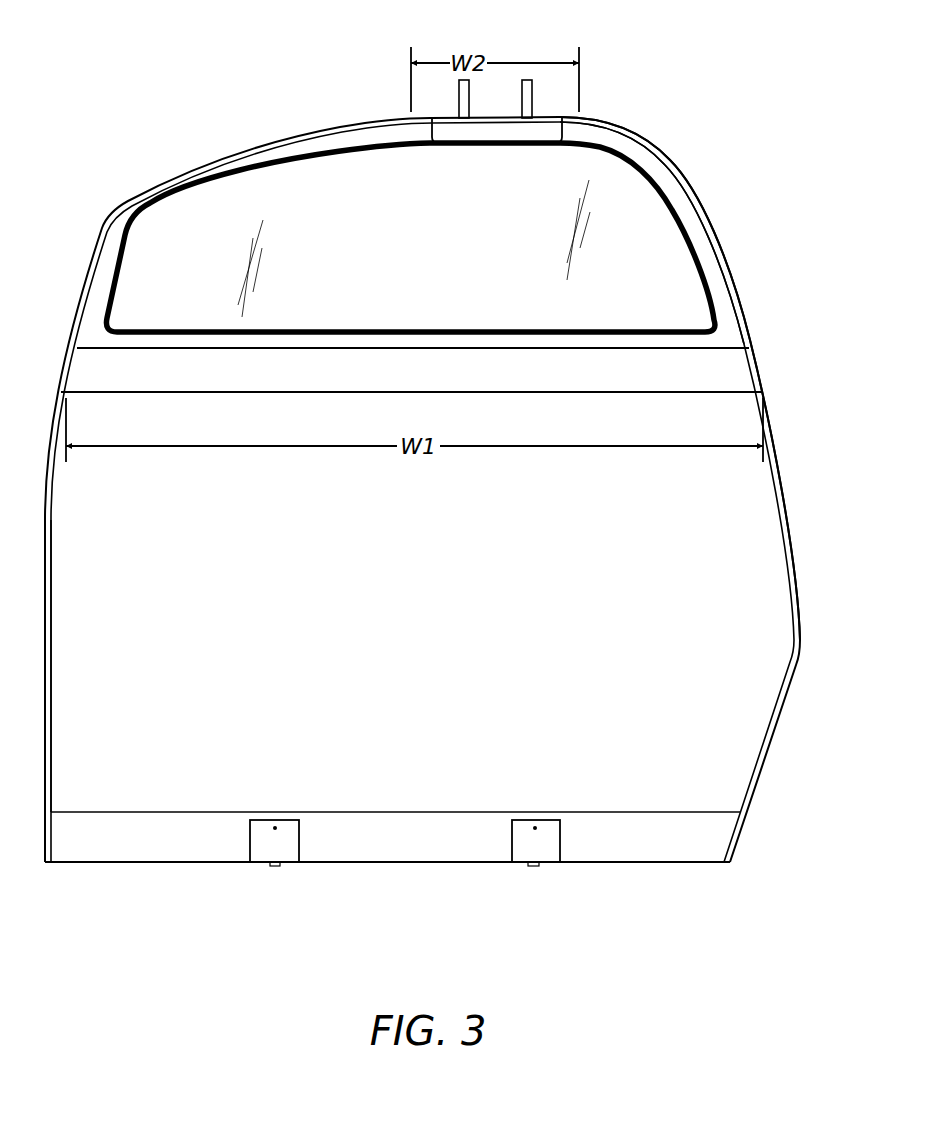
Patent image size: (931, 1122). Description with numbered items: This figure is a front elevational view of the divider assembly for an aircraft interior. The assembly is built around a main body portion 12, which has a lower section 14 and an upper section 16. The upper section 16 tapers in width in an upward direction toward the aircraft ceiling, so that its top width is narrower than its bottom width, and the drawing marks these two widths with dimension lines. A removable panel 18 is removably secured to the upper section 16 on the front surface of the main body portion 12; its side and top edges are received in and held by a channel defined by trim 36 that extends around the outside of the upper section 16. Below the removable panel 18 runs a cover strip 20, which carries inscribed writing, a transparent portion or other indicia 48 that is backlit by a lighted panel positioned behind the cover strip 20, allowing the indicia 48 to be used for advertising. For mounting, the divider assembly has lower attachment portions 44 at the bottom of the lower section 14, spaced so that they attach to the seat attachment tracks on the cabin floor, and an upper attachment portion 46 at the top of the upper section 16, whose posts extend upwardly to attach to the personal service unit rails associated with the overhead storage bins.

The main body portion 12 is at (772, 642).
The lower section 14 is at (432, 651).
The upper section 16 is at (678, 207).
The removable panel 18 is at (369, 258).
The cover strip 20 is at (623, 378).
The trim 36 is at (797, 560).
The lower attachment portions 44 is at (284, 843).
The upper attachment portion 46 is at (500, 132).
The indicia 48 is at (143, 410).